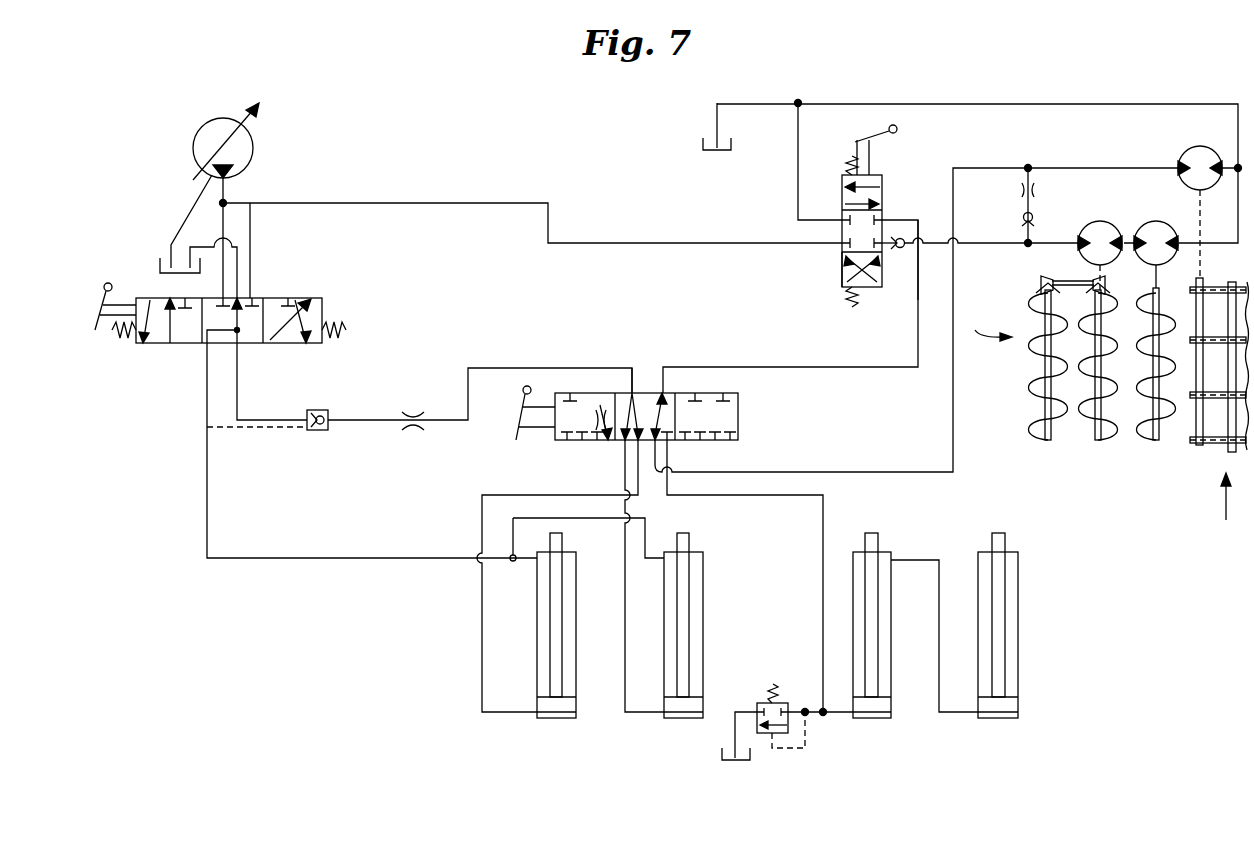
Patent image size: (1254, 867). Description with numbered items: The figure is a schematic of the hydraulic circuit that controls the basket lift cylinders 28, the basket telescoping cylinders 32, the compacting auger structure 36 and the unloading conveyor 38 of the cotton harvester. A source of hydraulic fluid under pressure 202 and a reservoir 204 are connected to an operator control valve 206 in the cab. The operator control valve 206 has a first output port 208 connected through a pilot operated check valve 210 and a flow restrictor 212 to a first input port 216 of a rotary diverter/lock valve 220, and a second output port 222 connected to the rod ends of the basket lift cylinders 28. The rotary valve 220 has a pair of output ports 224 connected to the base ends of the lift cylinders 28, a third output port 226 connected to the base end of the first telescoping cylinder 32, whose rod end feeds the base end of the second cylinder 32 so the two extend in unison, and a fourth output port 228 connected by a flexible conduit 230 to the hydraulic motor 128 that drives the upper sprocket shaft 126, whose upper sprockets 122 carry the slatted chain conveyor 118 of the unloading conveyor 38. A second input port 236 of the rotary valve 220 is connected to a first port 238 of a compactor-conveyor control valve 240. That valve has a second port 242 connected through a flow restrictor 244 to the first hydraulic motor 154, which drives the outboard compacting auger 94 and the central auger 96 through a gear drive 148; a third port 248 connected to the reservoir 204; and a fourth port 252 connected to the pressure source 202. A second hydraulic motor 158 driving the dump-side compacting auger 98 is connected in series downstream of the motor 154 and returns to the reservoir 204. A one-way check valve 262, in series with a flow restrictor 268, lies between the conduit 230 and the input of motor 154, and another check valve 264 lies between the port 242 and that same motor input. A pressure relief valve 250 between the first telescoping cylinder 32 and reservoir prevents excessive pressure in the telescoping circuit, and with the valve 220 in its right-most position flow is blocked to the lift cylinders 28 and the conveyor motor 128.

The source of hydraulic fluid under pressure 202 is at (253, 125).
The reservoir 204 is at (160, 264).
The operator control valve 206 is at (323, 298).
The first output port 208 is at (237, 368).
The pilot operated check valve 210 is at (318, 432).
The flow restrictor 212 is at (418, 414).
The first input port 216 is at (633, 370).
The rotary diverter/lock valve 220 is at (740, 400).
The second output port 222 is at (207, 378).
The output ports 224 is at (625, 443).
The third output port 226 is at (670, 447).
The fourth output port 228 is at (654, 478).
The flexible conduit 230 is at (953, 430).
The second input port 236 is at (663, 372).
The first port 238 is at (918, 222).
The compactor-conveyor control valve 240 is at (880, 175).
The second port 242 is at (882, 265).
The flow restrictor 244 is at (1000, 243).
The third port 248 is at (808, 221).
The pressure relief valve 250 is at (785, 703).
The fourth port 252 is at (716, 245).
The one-way check valve 262 is at (1034, 214).
The check valve 264 is at (900, 250).
The flow restrictor 268 is at (1022, 190).
The hydraulic motor 128 is at (1190, 150).
The first hydraulic motor 154 is at (1086, 229).
The second hydraulic motor 158 is at (1158, 198).
The gear drive 148 is at (1060, 283).
The compacting auger structure 36 is at (990, 323).
The outboard compacting auger 94 is at (1043, 440).
The central auger 96 is at (1097, 442).
The dump-side compacting auger 98 is at (1154, 442).
The upper sprocket shaft 126 is at (1194, 411).
The upper sprockets 122 is at (1200, 447).
The slatted chain conveyor 118 is at (1232, 455).
The unloading conveyor 38 is at (1216, 511).
The basket lift cylinders 28 is at (552, 720).
The basket telescoping cylinders 32 is at (975, 718).